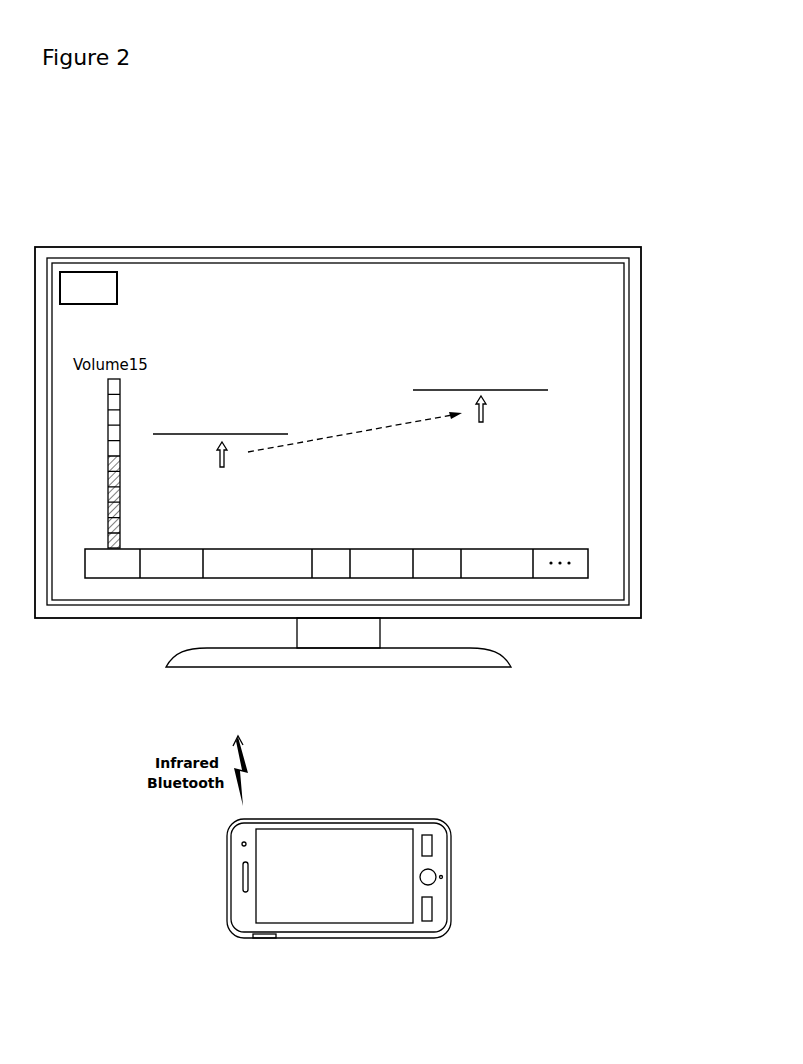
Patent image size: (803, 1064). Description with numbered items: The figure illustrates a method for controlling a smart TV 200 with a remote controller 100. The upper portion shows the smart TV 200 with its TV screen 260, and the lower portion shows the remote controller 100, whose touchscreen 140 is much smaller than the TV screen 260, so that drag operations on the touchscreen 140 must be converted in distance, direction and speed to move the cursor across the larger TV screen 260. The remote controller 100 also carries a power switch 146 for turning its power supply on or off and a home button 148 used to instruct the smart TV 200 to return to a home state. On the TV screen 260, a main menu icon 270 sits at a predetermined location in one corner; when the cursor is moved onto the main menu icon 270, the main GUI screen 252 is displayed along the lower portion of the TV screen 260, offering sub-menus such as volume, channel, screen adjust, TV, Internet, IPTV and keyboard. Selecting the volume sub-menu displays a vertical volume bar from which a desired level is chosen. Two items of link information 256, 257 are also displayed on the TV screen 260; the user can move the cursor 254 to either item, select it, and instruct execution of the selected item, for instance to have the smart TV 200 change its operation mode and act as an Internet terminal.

The smart TV 200 is at (598, 211).
The TV screen 260 is at (383, 260).
The main menu icon 270 is at (108, 272).
The link information 256 is at (236, 412).
The link information 257 is at (497, 367).
The pointer 254 is at (215, 456).
The main GUI screen 252 is at (597, 577).
The remote controller 100 is at (451, 830).
The touchscreen 140 is at (331, 843).
The home button 148 is at (445, 875).
The power switch 146 is at (256, 939).